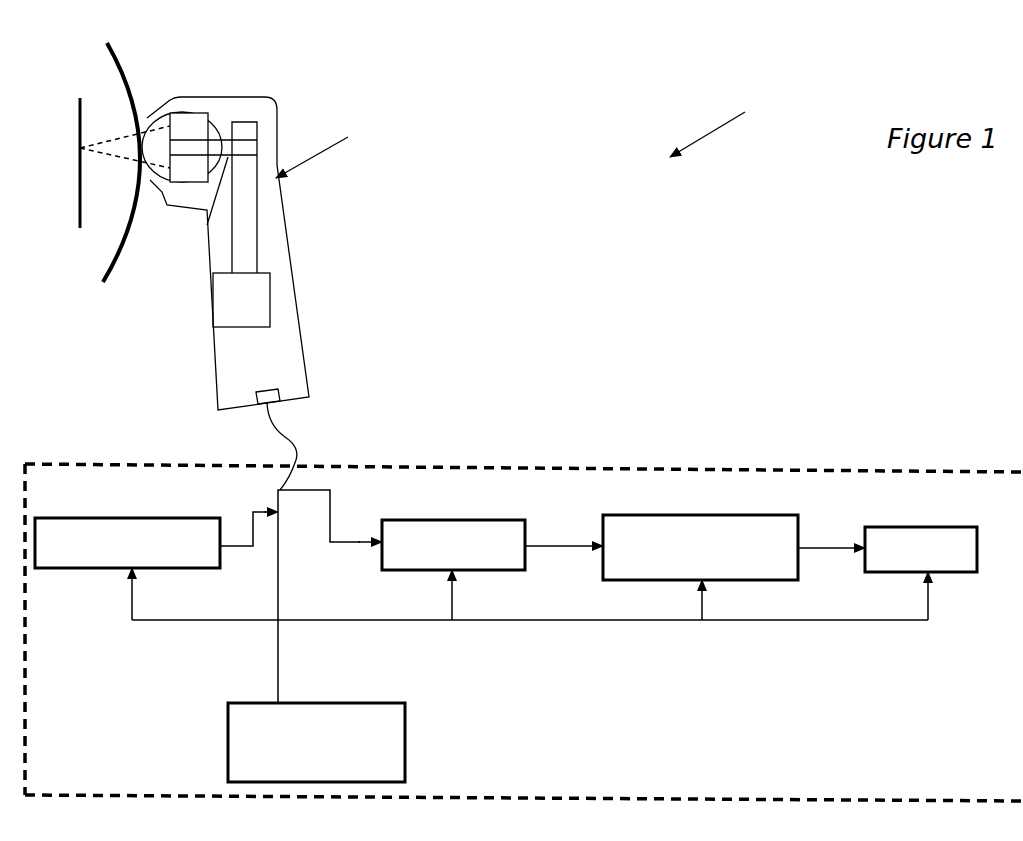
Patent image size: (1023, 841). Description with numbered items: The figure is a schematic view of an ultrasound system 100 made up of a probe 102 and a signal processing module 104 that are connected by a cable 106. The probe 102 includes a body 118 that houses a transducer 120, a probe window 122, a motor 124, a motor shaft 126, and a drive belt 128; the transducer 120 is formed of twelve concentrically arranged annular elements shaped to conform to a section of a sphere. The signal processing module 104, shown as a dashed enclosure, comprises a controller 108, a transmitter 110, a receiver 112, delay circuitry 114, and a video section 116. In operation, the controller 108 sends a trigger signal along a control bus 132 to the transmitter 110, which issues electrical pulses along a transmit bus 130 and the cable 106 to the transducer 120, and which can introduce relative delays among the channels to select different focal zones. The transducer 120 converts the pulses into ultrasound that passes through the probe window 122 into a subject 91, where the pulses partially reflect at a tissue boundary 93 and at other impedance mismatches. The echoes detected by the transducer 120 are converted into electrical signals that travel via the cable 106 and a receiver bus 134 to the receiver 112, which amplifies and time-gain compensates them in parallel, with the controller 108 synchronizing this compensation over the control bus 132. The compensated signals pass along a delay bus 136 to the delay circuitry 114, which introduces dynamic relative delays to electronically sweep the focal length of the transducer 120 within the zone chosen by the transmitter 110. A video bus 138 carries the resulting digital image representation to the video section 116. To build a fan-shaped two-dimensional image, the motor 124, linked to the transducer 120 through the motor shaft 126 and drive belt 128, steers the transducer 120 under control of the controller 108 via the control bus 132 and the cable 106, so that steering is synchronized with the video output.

The subject 91 is at (120, 58).
The tissue boundary 93 is at (83, 106).
The ultrasound system 100 is at (730, 127).
The probe 102 is at (267, 226).
The signal processing module 104 is at (750, 466).
The cable 106 is at (290, 430).
The controller 108 is at (405, 762).
The transmitter 110 is at (108, 518).
The receiver 112 is at (468, 520).
The delay circuitry 114 is at (687, 515).
The video section 116 is at (935, 527).
The body 118 is at (293, 257).
The transducer 120 is at (200, 113).
The probe window 122 is at (150, 113).
The motor 124 is at (213, 305).
The motor shaft 126 is at (232, 243).
The drive belt 128 is at (207, 227).
The transmit bus 130 is at (266, 508).
The control bus 132 is at (278, 683).
The receiver bus 134 is at (330, 527).
The delay bus 136 is at (580, 548).
The video bus 138 is at (853, 548).